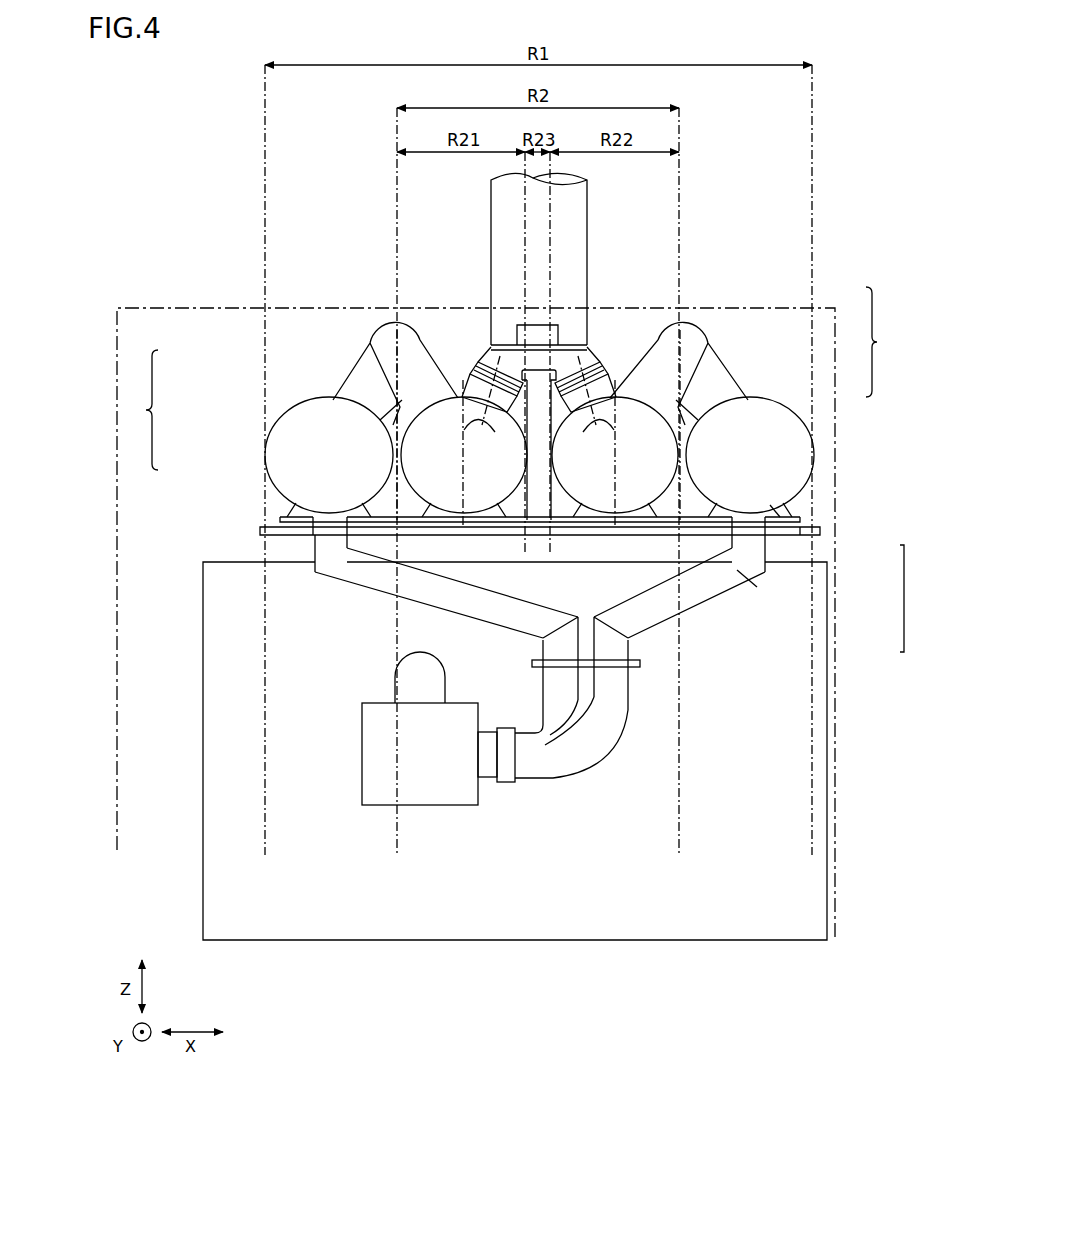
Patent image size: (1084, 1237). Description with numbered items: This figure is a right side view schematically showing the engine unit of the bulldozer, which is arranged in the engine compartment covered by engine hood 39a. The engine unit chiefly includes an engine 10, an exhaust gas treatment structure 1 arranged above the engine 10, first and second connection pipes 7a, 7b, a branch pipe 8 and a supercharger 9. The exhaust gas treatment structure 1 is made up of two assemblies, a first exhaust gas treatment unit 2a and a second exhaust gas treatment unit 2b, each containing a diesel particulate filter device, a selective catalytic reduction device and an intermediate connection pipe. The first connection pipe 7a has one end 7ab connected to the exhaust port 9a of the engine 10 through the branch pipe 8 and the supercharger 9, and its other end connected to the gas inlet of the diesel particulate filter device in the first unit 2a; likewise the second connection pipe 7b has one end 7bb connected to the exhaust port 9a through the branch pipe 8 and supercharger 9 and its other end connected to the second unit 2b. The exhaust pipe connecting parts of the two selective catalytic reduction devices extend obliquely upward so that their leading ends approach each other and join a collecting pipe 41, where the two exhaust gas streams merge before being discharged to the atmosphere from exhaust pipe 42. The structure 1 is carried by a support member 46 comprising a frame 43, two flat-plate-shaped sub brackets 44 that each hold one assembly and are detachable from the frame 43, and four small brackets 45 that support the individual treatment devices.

The exhaust gas treatment structure 1 is at (716, 205).
The engine hood 39a is at (148, 305).
The exhaust pipe 42 is at (565, 222).
The collecting pipe 41 is at (592, 358).
The first exhaust gas treatment unit 2a is at (324, 435).
The second exhaust gas treatment unit 2b is at (727, 406).
The small bracket 45 is at (280, 512).
The sub bracket 44 is at (316, 542).
The frame 43 is at (737, 570).
The support member 46 is at (728, 511).
The first connection pipe 7a is at (363, 570).
The second connection pipe 7b is at (700, 563).
The one end 7ab is at (558, 660).
The one end 7bb is at (614, 660).
The branch pipe 8 is at (550, 755).
The supercharger 9 is at (382, 757).
The exhaust port 9a is at (417, 680).
The engine 10 is at (795, 695).